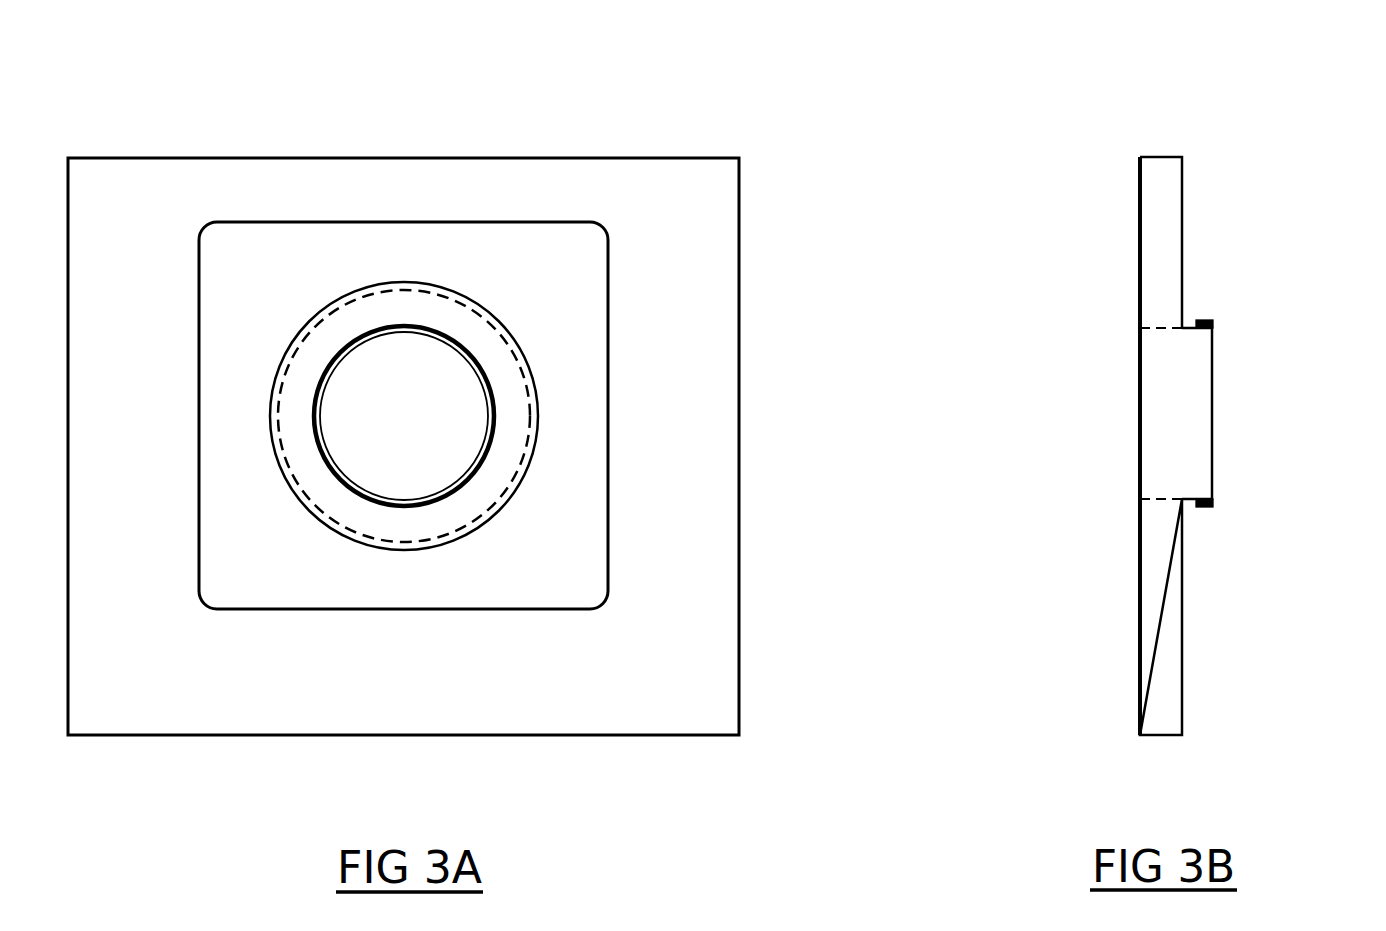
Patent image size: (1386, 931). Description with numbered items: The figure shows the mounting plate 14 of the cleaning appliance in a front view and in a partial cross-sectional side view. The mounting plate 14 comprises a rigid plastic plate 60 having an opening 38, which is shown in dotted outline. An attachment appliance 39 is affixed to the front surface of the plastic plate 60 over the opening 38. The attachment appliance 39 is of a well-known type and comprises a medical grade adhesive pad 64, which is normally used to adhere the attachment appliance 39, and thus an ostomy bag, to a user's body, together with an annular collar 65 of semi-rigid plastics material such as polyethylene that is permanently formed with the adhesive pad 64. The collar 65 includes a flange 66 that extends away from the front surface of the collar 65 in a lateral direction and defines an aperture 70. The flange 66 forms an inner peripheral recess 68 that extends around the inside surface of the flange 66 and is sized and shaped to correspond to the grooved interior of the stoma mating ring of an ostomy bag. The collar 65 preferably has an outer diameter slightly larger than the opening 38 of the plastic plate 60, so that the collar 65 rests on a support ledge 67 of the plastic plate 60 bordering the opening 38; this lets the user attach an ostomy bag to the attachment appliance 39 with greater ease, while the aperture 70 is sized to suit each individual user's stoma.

In FIG. 3A, the mounting plate 14 is at (770, 154).
In FIG. 3B, the mounting plate 14 is at (1118, 228).
In FIG. 3A, the opening 38 is at (462, 504).
In FIG. 3A, the attachment appliance 39 is at (622, 274).
In FIG. 3A, the rigid plastic plate 60 is at (682, 636).
In FIG. 3B, the rigid plastic plate 60 is at (1170, 717).
In FIG. 3A, the medical grade adhesive pad 64 is at (572, 538).
In FIG. 3A, the annular collar 65 is at (396, 308).
In FIG. 3A, the flange 66 is at (494, 400).
In FIG. 3B, the flange 66 is at (1220, 308).
In FIG. 3A, the support ledge 67 is at (345, 530).
In FIG. 3B, the inner peripheral recess 68 is at (1198, 308).
In FIG. 3A, the aperture 70 is at (388, 421).
In FIG. 3B, the aperture 70 is at (1163, 422).